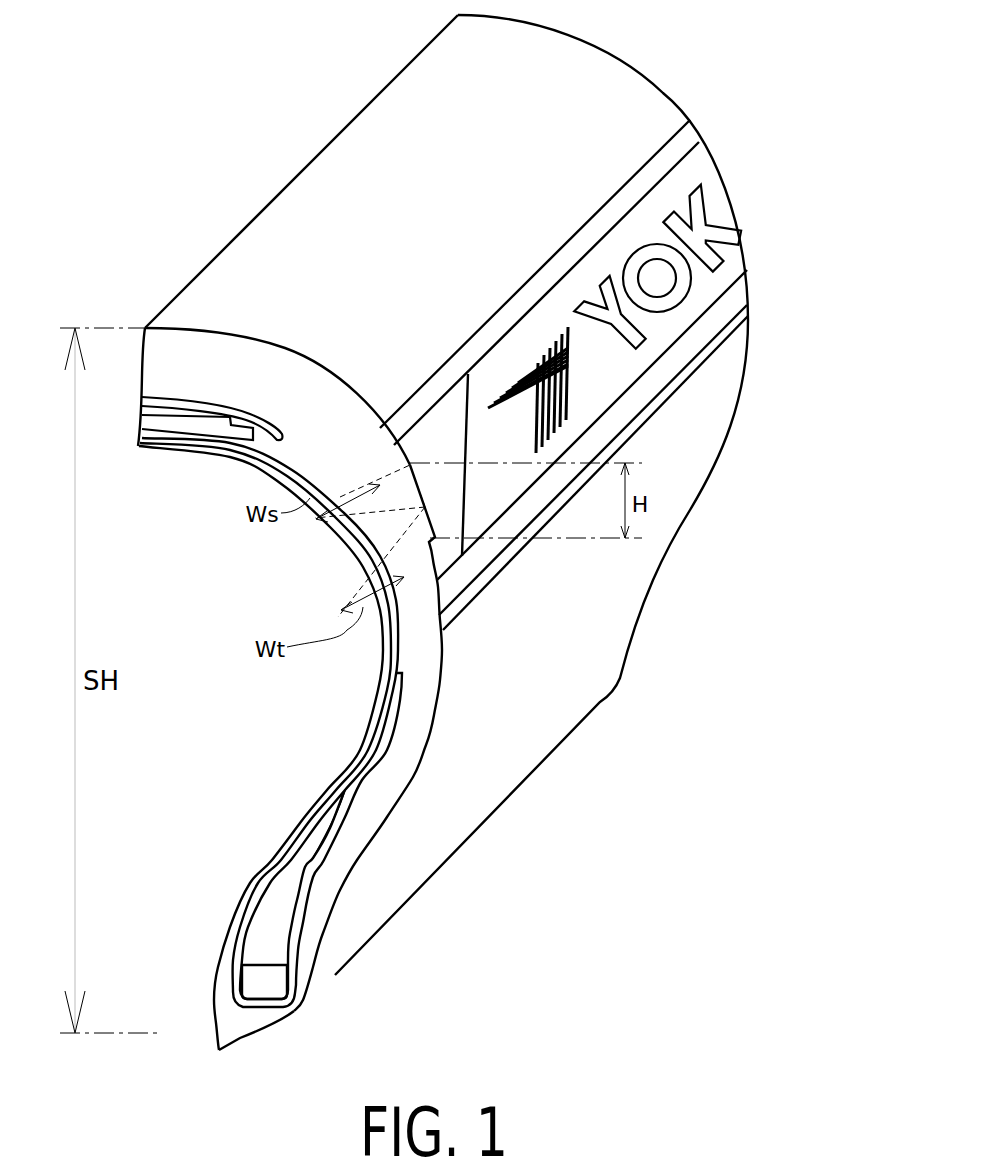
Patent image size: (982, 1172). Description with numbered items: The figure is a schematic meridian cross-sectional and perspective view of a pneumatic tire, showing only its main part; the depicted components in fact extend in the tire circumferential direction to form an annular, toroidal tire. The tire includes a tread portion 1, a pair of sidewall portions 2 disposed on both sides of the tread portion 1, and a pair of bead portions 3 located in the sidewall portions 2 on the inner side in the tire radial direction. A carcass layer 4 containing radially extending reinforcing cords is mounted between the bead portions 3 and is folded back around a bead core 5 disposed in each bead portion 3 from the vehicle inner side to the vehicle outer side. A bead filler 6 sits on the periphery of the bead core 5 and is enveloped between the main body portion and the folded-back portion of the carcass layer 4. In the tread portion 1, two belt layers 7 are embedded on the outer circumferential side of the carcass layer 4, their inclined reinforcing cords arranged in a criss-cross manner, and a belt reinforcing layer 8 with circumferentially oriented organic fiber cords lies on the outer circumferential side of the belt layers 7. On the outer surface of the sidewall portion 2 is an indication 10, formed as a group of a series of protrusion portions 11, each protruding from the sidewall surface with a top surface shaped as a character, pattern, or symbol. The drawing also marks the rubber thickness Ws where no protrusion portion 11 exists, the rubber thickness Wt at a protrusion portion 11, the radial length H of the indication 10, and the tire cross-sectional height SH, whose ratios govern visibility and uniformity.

The tread portion 1 is at (200, 307).
The sidewall portion 2 is at (462, 655).
The bead portion 3 is at (332, 977).
The carcass layer 4 is at (387, 640).
The bead core 5 is at (260, 985).
The bead filler 6 is at (277, 948).
The belt layer 7 is at (162, 428).
The belt reinforcing layer 8 is at (253, 418).
The indication 10 is at (718, 211).
The protrusion portion 11 is at (573, 397).